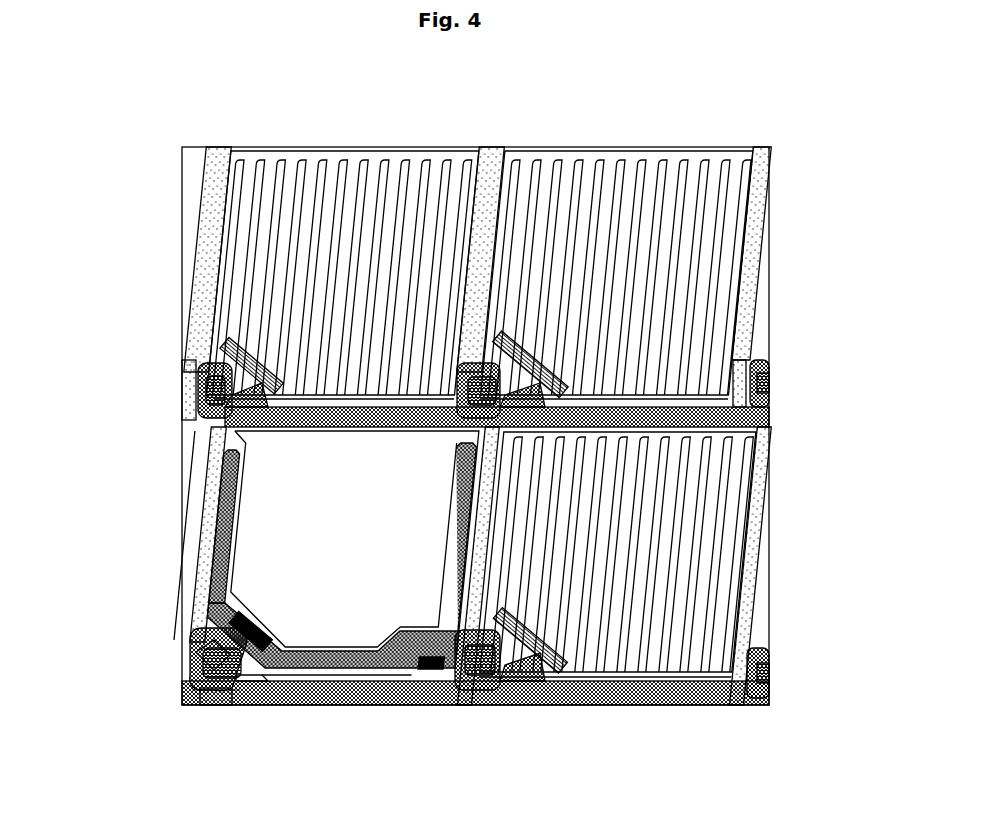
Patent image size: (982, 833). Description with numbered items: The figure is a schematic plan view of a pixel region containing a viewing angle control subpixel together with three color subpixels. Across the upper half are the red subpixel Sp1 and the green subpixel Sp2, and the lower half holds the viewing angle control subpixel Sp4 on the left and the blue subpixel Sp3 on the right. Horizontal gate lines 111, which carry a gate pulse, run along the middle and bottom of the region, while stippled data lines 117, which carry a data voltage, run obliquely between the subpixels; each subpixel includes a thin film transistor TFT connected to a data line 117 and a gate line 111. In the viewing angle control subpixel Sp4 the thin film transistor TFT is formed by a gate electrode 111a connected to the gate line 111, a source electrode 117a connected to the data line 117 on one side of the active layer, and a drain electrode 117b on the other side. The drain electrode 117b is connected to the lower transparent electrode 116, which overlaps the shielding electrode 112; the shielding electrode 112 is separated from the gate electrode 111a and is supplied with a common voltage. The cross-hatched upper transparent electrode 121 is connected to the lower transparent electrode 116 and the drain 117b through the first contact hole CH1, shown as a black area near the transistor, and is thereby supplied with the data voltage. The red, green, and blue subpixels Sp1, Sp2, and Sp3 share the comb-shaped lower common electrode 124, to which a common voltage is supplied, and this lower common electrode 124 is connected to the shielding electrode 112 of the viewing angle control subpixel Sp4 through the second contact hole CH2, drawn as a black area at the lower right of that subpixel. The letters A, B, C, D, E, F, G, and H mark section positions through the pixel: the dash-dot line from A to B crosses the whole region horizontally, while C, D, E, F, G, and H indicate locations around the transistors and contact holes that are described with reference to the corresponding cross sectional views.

The gate line 111 is at (708, 706).
The gate electrode 111a is at (203, 641).
The shielding electrode 112 is at (212, 588).
The lower transparent electrode 116 is at (245, 476).
The data line 117 is at (218, 440).
The source electrode 117a is at (197, 657).
The drain electrode 117b is at (246, 706).
The upper transparent electrode 121 is at (228, 498).
The lower common electrode 124 is at (752, 452).
The thin film transistor TFT is at (208, 706).
The first contact hole CH1 is at (248, 620).
The second contact hole CH2 is at (427, 632).
The red subpixel Sp1 is at (356, 130).
The green subpixel Sp2 is at (622, 130).
The blue subpixel Sp3 is at (620, 722).
The viewing angle control subpixel Sp4 is at (329, 722).
The section line end A is at (820, 550).
The section line end B is at (833, 551).
The point C is at (196, 684).
The point D is at (270, 618).
The point E is at (410, 624).
The point F is at (458, 706).
The point G is at (458, 706).
The point H is at (525, 640).